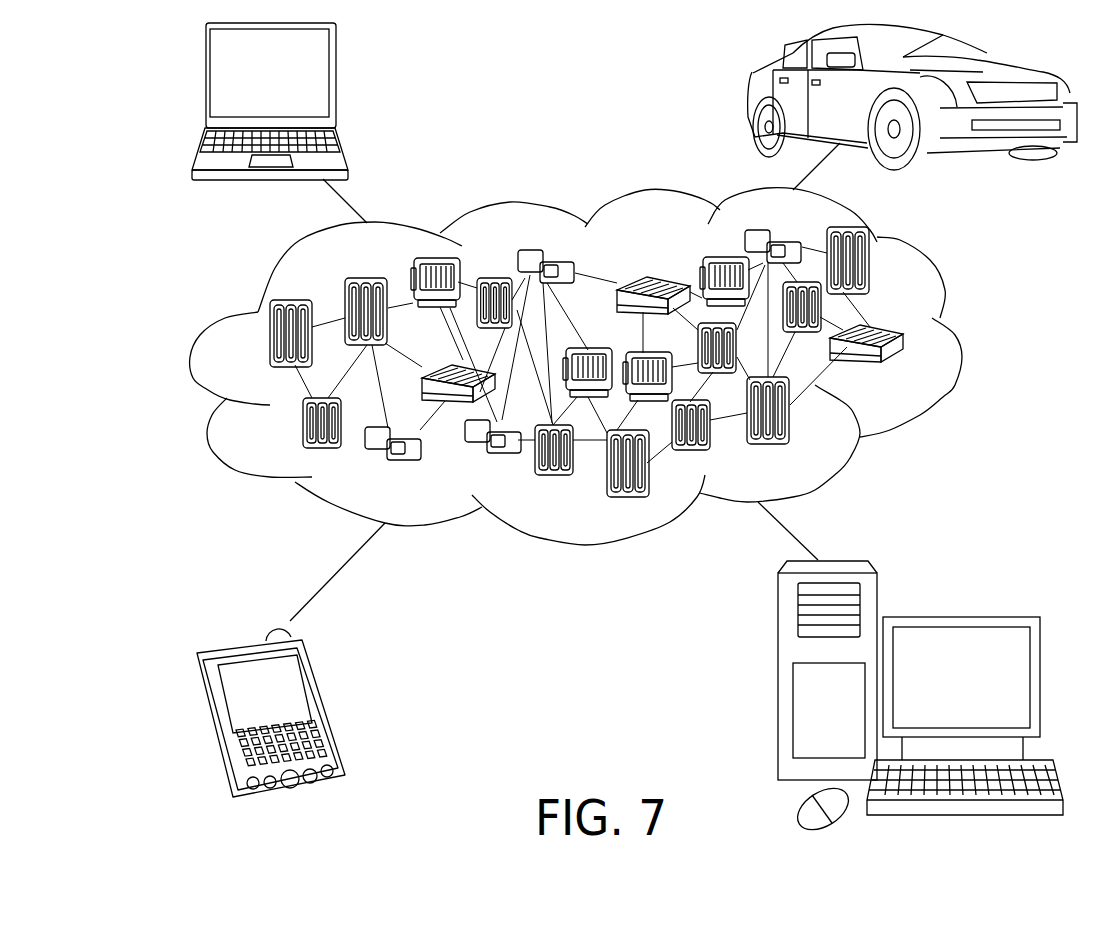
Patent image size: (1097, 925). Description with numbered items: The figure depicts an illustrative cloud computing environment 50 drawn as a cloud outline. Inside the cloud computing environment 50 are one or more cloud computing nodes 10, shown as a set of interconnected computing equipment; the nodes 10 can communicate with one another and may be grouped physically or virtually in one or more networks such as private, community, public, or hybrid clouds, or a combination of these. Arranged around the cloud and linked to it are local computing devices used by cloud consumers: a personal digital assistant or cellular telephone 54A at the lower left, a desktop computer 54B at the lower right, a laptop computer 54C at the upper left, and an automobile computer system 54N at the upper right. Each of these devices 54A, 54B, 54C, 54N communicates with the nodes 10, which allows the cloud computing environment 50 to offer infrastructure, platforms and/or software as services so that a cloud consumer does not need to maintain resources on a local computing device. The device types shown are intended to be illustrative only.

The cloud computing node 10 is at (903, 371).
The cloud computing environment 50 is at (965, 340).
The personal digital assistant or cellular telephone 54A is at (330, 704).
The desktop computer 54B is at (958, 615).
The laptop computer 54C is at (340, 82).
The automobile computer system 54N is at (752, 97).